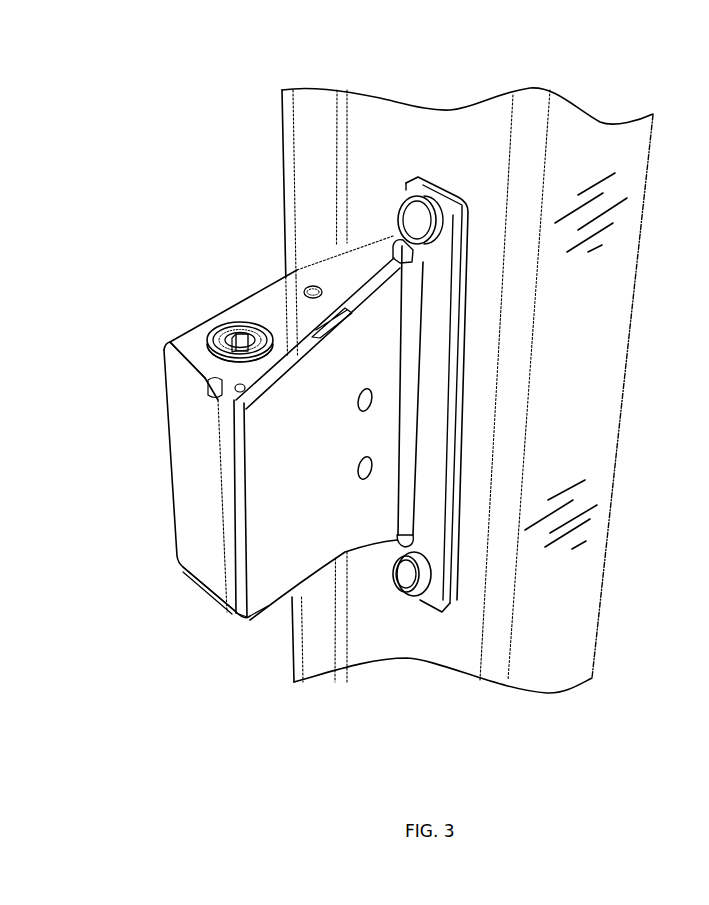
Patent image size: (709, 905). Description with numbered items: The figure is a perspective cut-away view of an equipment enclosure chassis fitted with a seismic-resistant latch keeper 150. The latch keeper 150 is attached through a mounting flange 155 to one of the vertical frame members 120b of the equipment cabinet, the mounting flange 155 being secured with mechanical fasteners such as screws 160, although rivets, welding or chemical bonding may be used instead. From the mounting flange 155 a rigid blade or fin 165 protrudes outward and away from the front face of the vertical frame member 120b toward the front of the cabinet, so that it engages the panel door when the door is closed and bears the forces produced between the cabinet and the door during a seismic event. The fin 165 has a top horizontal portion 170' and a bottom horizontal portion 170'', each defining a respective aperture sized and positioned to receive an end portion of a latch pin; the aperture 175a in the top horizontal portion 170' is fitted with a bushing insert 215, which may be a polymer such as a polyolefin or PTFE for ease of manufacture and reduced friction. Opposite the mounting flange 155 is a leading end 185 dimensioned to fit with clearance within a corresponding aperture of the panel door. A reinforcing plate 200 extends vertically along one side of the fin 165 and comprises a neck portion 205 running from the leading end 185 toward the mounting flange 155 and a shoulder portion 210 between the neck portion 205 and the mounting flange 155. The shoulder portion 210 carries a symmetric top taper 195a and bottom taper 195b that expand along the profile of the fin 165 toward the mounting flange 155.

The vertical frame member 120b is at (602, 122).
The latch keeper 150 is at (240, 216).
The mounting flange 155 is at (440, 186).
The screws 160 is at (400, 208).
The fin 165 is at (172, 506).
The top horizontal portion 170' is at (281, 289).
The bottom horizontal portion 170'' is at (177, 586).
The aperture 175a is at (257, 340).
The leading end 185 is at (188, 421).
The top taper 195a is at (372, 279).
The bottom taper 195b is at (362, 550).
The reinforcing plate 200 is at (268, 606).
The neck portion 205 is at (262, 605).
The shoulder portion 210 is at (352, 367).
The bushing insert 215 is at (212, 340).